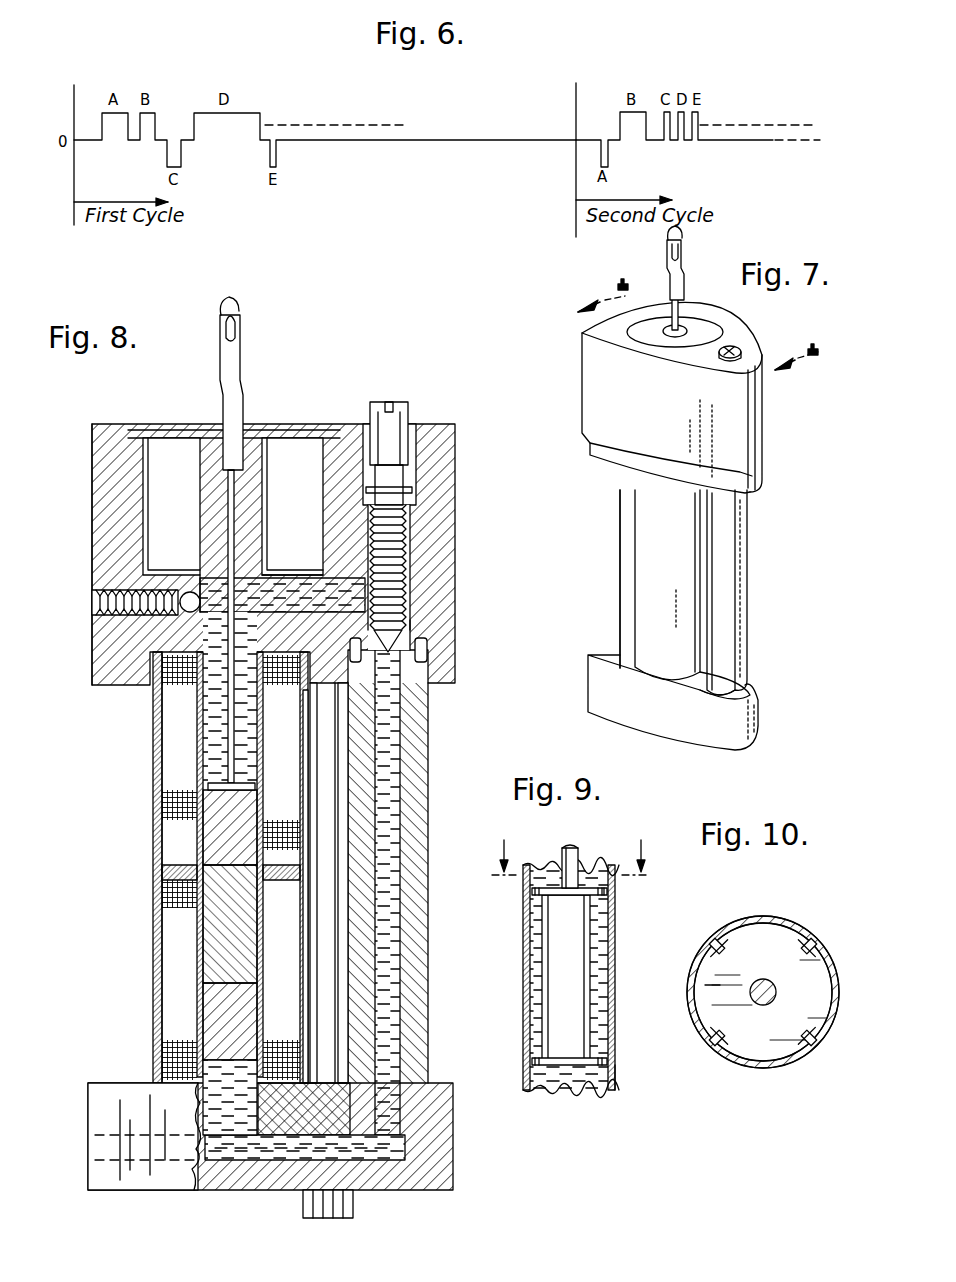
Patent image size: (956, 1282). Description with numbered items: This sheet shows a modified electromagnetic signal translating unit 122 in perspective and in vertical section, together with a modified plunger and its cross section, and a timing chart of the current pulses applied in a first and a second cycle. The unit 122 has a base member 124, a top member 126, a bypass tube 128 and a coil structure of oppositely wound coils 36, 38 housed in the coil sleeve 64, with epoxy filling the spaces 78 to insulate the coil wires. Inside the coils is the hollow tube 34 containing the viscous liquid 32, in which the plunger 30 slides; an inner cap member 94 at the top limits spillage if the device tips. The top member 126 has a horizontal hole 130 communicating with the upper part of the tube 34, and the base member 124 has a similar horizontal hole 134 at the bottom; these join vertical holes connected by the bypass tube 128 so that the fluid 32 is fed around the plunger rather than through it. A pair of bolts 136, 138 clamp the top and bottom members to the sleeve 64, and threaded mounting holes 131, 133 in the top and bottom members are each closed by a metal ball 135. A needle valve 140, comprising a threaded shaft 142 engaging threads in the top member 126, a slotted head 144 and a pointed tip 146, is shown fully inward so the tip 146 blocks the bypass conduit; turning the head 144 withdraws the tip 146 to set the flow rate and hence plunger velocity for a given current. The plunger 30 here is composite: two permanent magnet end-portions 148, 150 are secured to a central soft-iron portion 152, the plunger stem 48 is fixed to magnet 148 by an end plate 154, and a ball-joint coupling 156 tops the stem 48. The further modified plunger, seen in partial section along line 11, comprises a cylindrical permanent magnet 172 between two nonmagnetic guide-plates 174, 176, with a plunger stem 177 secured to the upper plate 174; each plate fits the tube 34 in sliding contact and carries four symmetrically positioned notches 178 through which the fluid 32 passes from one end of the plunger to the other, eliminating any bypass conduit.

In FIG. 9, the section line 11- 11 is at (571, 871).
In FIG. 8, the plunger 30 is at (215, 805).
In FIG. 8, the viscous liquid 32 is at (212, 590).
In FIG. 9, the viscous liquid 32 is at (605, 1078).
In FIG. 8, the hollow tube 34 is at (195, 728).
In FIG. 9, the hollow tube 34 is at (525, 945).
In FIG. 10, the hollow tube 34 is at (770, 918).
In FIG. 8, the solenoid coil 36 is at (170, 700).
In FIG. 8, the solenoid coil 38 is at (170, 905).
In FIG. 8, the plunger stem 48 is at (240, 530).
In FIG. 7, the plunger stem 48 is at (680, 305).
In FIG. 8, the coil sleeve 64 is at (155, 982).
In FIG. 7, the coil sleeve 64 is at (686, 548).
In FIG. 8, the spaces 78 is at (170, 872).
In FIG. 8, the inner cap member 94 is at (200, 476).
In FIG. 8, the electromagnetic unit 122 is at (104, 420).
In FIG. 7, the electromagnetic unit 122 is at (701, 397).
In FIG. 8, the base member 124 is at (440, 1148).
In FIG. 7, the base member 124 is at (755, 700).
In FIG. 8, the top member 126 is at (440, 585).
In FIG. 7, the top member 126 is at (745, 345).
In FIG. 8, the bypass tube 128 is at (412, 815).
In FIG. 7, the bypass tube 128 is at (737, 575).
In FIG. 8, the horizontal hole 130 is at (300, 578).
In FIG. 8, the threaded hole 131 is at (92, 604).
In FIG. 8, the threaded hole 133 is at (100, 1155).
In FIG. 8, the horizontal hole 134 is at (300, 1160).
In FIG. 8, the metal ball 135 is at (192, 580).
In FIG. 8, the bolt 136 is at (345, 862).
In FIG. 7, the bolt 136 is at (708, 690).
In FIG. 7, the bolt 138 is at (620, 520).
In FIG. 8, the needle valve 140 is at (431, 517).
In FIG. 8, the threaded shaft 142 is at (410, 542).
In FIG. 8, the slotted head 144 is at (404, 412).
In FIG. 7, the slotted head 144 is at (732, 345).
In FIG. 8, the pointed tip 146 is at (430, 626).
In FIG. 8, the permanent magnet end-portion 148 is at (230, 828).
In FIG. 8, the permanent magnet end-portion 150 is at (230, 1021).
In FIG. 8, the central soft-iron portion 152 is at (230, 924).
In FIG. 8, the end plate 154 is at (205, 762).
In FIG. 8, the ball-joint coupling 156 is at (222, 312).
In FIG. 7, the ball-joint coupling 156 is at (665, 252).
In FIG. 9, the cylindrical permanent magnet 172 is at (578, 986).
In FIG. 9, the nonmagnetic guide-plate 174 is at (540, 890).
In FIG. 10, the nonmagnetic guide-plate 174 is at (705, 982).
In FIG. 9, the nonmagnetic guide-plate 176 is at (565, 1062).
In FIG. 9, the plunger stem 177 is at (580, 858).
In FIG. 10, the plunger stem 177 is at (770, 982).
In FIG. 10, the notches 178 is at (712, 940).